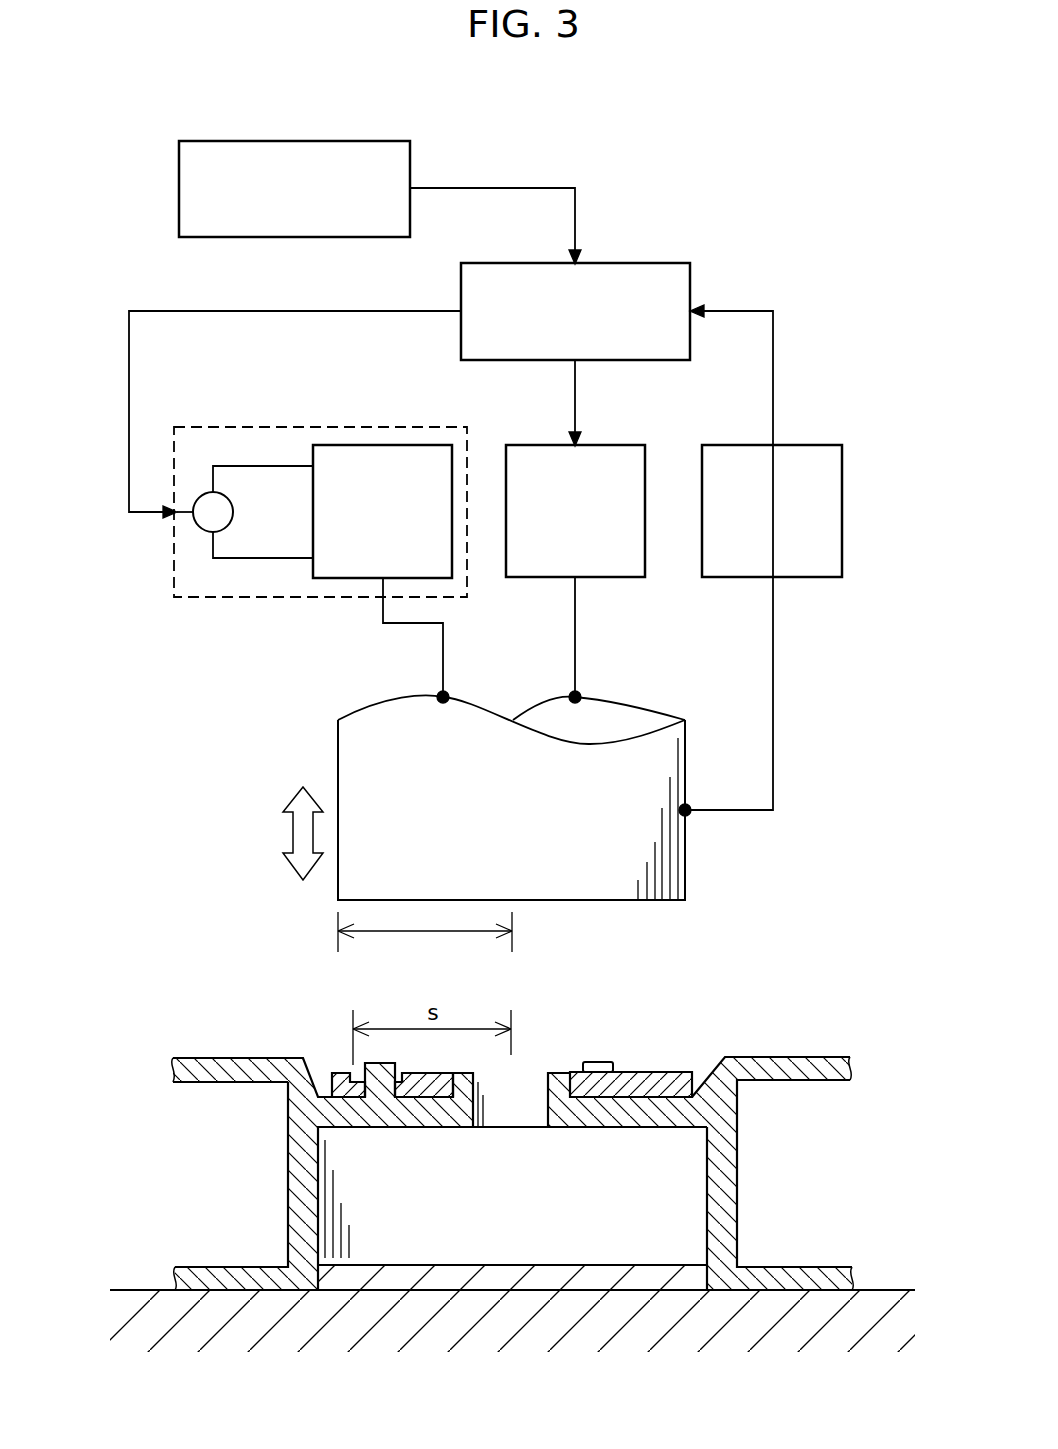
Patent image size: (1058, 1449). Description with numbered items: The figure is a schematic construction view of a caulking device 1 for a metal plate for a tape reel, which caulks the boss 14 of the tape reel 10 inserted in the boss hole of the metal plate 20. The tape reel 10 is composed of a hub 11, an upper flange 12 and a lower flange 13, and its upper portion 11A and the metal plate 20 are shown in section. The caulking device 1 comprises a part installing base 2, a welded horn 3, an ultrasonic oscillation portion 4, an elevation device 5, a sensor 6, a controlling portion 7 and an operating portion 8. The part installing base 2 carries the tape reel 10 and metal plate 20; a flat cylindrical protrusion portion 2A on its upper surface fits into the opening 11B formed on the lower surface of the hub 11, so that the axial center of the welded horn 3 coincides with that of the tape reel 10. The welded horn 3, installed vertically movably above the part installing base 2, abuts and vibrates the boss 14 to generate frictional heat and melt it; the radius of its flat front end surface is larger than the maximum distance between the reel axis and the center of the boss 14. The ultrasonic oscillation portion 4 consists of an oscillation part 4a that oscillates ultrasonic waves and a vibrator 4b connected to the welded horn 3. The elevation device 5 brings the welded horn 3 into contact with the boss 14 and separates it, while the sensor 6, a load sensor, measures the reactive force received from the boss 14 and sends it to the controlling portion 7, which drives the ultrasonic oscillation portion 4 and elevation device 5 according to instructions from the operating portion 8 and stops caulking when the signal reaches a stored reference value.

The caulking device 1 is at (640, 203).
The part installing base 2 is at (145, 1292).
The protrusion portion 2A is at (515, 1263).
The welded horn 3 is at (338, 752).
The ultrasonic oscillation portion 4 is at (241, 427).
The oscillation part 4a is at (197, 528).
The vibrator 4b is at (350, 445).
The elevation device 5 is at (608, 445).
The sensor 6 is at (805, 445).
The controlling portion 7 is at (653, 263).
The operating portion 8 is at (372, 140).
The tape reel 10 is at (545, 1134).
The hub 11 is at (727, 1173).
The upper portion of housing 11A is at (325, 1095).
The opening 11B is at (703, 1272).
The upper flange 12 is at (768, 1080).
The lower flange 13 is at (768, 1267).
The boss 14 is at (358, 1068).
The metal plate 20 is at (663, 1072).